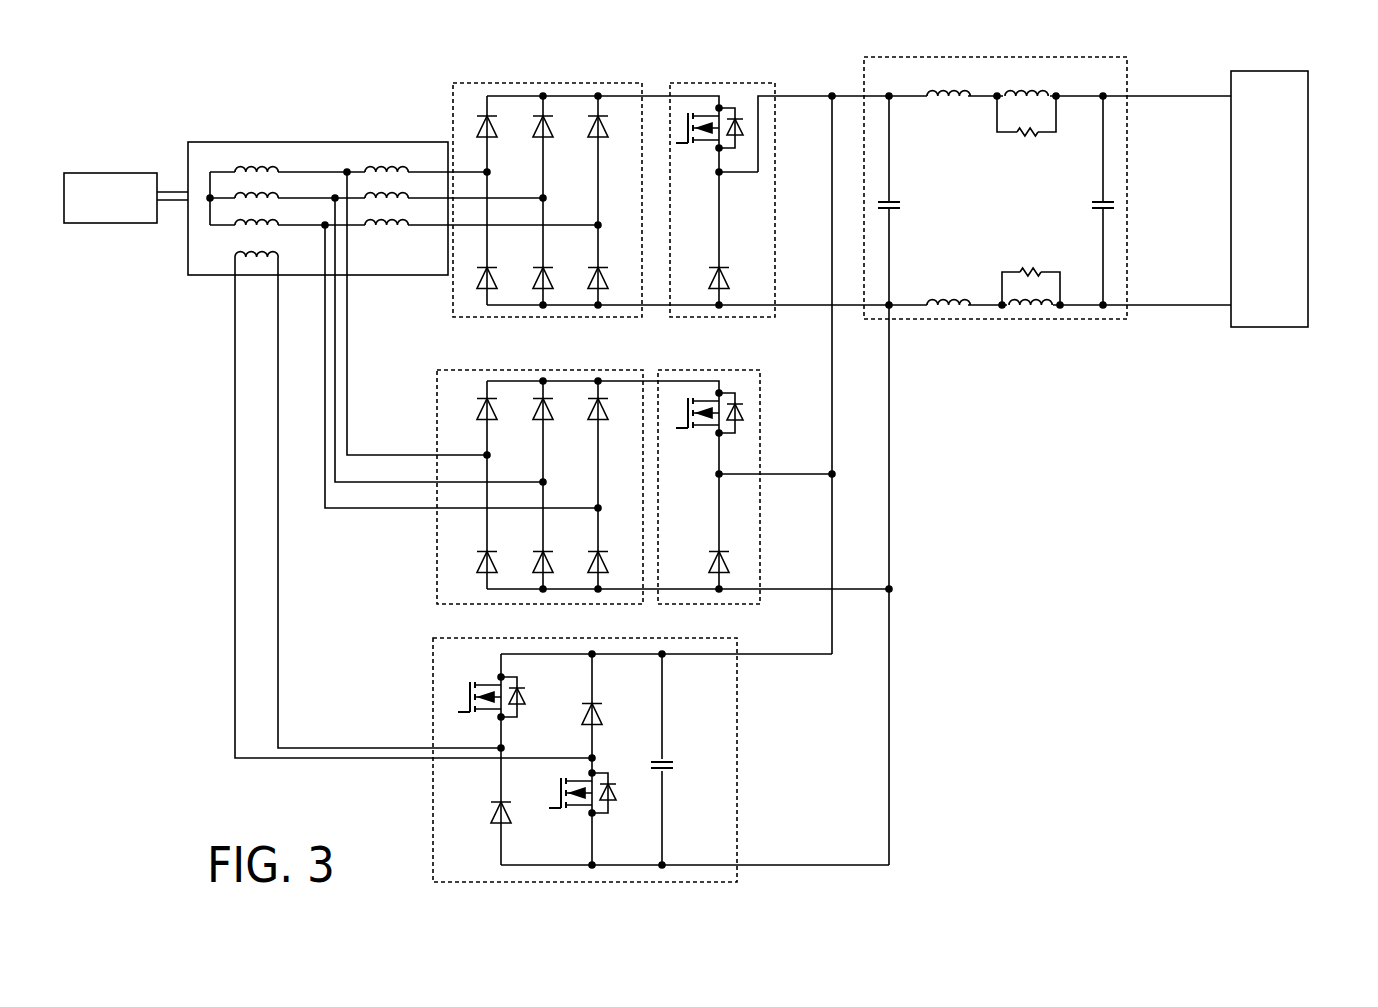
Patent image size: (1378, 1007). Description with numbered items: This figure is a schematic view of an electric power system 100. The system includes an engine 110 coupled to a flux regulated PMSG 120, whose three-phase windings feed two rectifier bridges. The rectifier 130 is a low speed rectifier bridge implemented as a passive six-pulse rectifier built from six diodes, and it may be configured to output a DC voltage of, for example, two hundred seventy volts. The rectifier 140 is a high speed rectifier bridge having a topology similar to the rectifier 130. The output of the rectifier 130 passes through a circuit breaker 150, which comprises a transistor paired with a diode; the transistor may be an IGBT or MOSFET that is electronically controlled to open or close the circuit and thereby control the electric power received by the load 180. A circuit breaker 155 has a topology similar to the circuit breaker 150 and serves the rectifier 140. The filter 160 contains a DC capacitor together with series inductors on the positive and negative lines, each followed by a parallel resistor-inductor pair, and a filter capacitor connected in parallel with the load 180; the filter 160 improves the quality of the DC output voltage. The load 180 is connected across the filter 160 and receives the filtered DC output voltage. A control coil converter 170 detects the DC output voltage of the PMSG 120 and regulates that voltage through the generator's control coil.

The electric power system 100 is at (148, 70).
The engine 110 is at (82, 173).
The flux regulated PMSG 120 is at (373, 142).
The rectifier 130 is at (465, 83).
The rectifier 140 is at (460, 370).
The circuit breaker 150 is at (740, 83).
The circuit breaker 155 is at (735, 370).
The filter 160 is at (900, 57).
The control coil converter 170 is at (432, 670).
The load 180 is at (1308, 112).